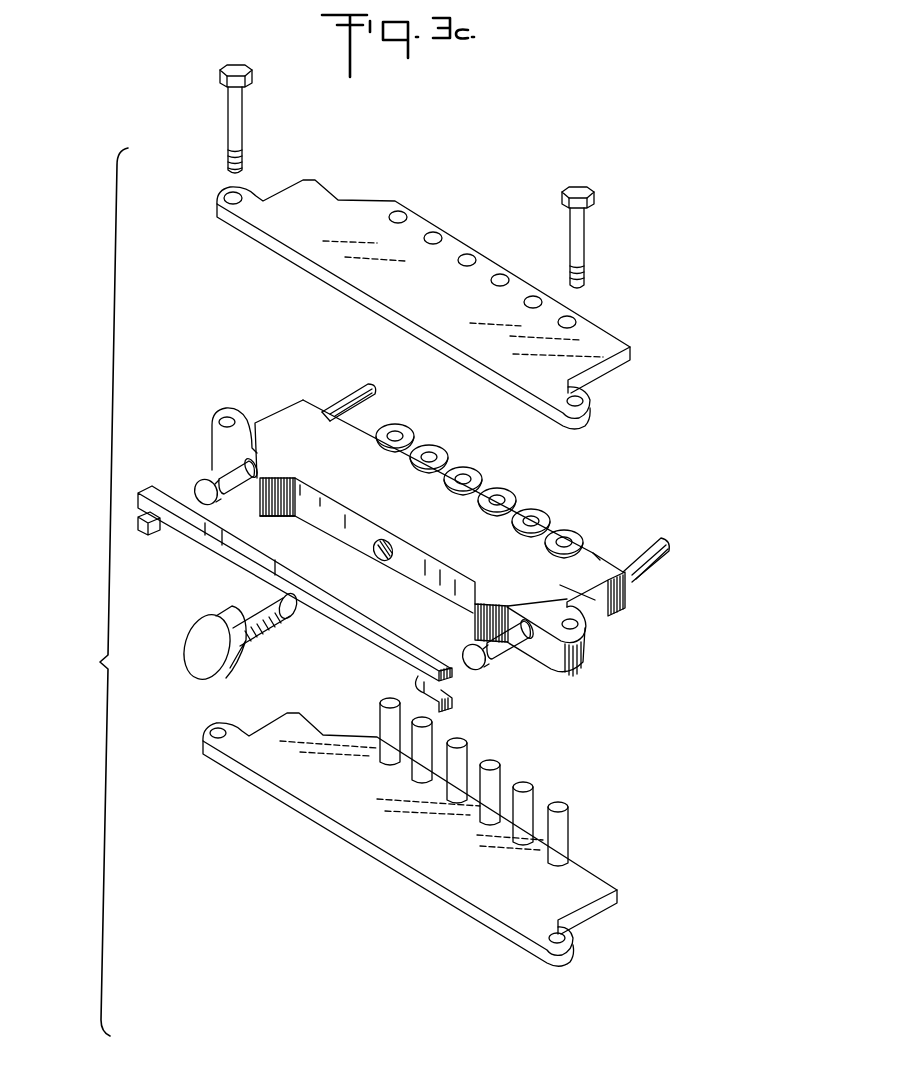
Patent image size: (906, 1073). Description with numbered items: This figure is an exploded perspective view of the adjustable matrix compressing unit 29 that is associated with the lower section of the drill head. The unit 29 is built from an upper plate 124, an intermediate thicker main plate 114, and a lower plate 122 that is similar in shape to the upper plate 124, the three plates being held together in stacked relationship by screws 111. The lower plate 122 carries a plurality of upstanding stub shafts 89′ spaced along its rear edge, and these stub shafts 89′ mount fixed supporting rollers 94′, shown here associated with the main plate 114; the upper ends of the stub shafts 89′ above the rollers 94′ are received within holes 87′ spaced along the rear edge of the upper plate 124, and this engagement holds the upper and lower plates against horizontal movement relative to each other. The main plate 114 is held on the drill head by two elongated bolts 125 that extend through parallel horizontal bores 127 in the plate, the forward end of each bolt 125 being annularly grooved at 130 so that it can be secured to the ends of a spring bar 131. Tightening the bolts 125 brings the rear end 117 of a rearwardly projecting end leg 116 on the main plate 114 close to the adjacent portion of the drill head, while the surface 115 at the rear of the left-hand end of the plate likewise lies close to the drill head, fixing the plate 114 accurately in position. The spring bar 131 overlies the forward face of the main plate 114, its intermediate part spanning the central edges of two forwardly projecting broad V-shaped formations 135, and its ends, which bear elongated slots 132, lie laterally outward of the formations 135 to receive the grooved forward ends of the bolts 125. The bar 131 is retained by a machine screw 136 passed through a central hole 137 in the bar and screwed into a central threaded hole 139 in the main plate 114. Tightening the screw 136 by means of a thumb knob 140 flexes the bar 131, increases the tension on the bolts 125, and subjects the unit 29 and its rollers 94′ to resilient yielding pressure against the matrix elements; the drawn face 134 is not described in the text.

The adjustable matrix compressing unit 29 is at (95, 592).
The screws 111 is at (219, 72).
The upper plate 124 is at (423, 286).
The holes 87′ is at (406, 214).
The intermediate thicker plate 114 is at (424, 532).
The surface 115 is at (330, 412).
The elongated bolts 125 is at (513, 467).
The fixed supporting rollers 94′ is at (408, 428).
The horizontal bores 127 is at (245, 418).
The annular groove 130 is at (216, 480).
The V-shaped formations 135 is at (266, 480).
The end face 134 is at (472, 620).
The spring bar 131 is at (362, 637).
The central threaded hole 139 is at (378, 560).
The elongated slots 132 is at (148, 528).
The rear end 117 is at (590, 568).
The rearwardly projecting end leg 116 is at (603, 560).
The thumb knob 140 is at (203, 660).
The machine screw 136 is at (272, 640).
The central hole 137 is at (293, 618).
The stub shafts 89′ is at (530, 783).
The lower plate 122 is at (410, 832).